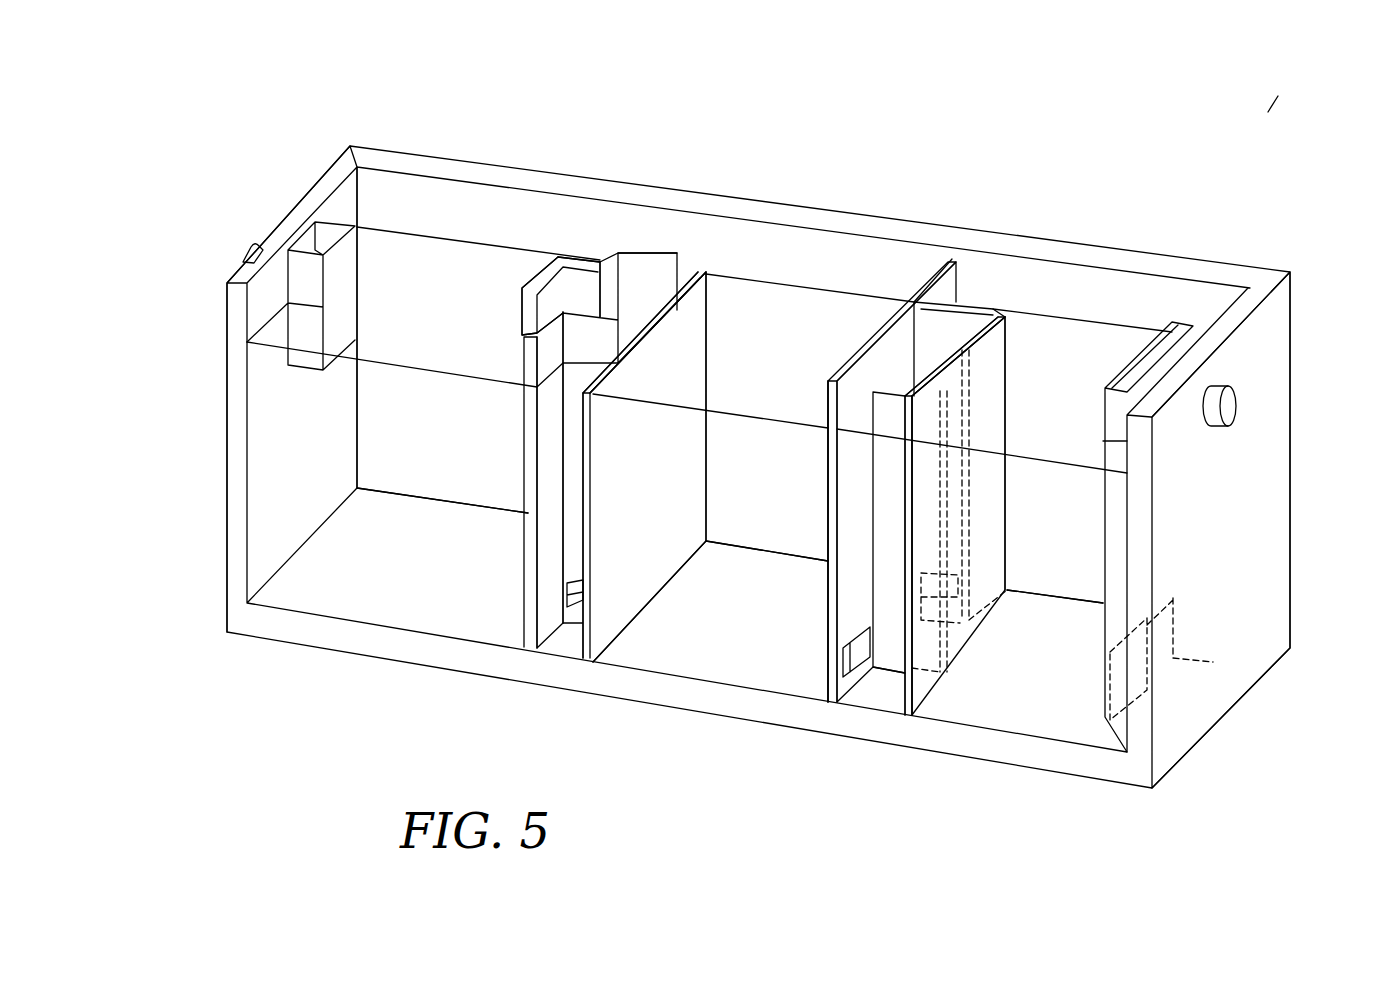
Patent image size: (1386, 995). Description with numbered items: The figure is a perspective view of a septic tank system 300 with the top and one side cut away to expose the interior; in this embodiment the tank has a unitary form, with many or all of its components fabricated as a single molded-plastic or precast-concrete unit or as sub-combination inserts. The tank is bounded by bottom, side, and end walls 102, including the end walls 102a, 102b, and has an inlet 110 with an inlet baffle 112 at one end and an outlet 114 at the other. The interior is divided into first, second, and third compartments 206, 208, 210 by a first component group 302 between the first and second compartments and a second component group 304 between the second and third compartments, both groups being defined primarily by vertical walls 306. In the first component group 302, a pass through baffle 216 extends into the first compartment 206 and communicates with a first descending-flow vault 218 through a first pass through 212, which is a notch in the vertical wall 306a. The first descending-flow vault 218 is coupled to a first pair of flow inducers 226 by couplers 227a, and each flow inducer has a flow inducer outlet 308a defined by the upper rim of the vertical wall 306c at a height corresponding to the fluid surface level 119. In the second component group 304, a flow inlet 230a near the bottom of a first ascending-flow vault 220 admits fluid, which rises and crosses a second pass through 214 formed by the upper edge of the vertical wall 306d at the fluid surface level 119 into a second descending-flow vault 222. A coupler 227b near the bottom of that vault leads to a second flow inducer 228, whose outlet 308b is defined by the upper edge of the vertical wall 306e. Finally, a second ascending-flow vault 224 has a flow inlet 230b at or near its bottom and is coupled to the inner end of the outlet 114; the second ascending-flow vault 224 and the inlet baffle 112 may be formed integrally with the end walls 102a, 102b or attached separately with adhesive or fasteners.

The septic tank system 300 is at (1280, 100).
The bottom, side, and end walls 102 is at (935, 753).
The end wall 102a is at (322, 188).
The end wall 102b is at (1238, 310).
The inlet 110 is at (243, 250).
The inlet baffle 112 is at (345, 300).
The outlet 114 is at (1228, 428).
The fluid surface level 119 is at (420, 225).
The first compartment 206 is at (465, 190).
The second compartment 208 is at (825, 240).
The third compartment 210 is at (1140, 280).
The first pass through 212 is at (575, 298).
The second pass through 214 is at (850, 375).
The pass through baffle 216 is at (560, 250).
The first descending-flow vault 218 is at (650, 240).
The first ascending-flow vault 220 is at (885, 362).
The second descending-flow vault 222 is at (935, 310).
The second ascending-flow vault 224 is at (1195, 310).
The first pair of flow inducers 226 is at (700, 240).
The couplers 227a is at (572, 580).
The coupler 227b is at (953, 573).
The second flow inducer 228 is at (1000, 265).
The flow inlet 230a is at (838, 660).
The flow inlet 230b is at (1112, 657).
The first component group 302 is at (585, 200).
The second component group 304 is at (902, 245).
The vertical walls 306 is at (528, 567).
The vertical wall 306a is at (607, 248).
The vertical wall 306c is at (672, 442).
The vertical wall 306d is at (890, 500).
The vertical wall 306e is at (1003, 380).
The flow inducer outlet 308a is at (707, 272).
The outlet 308b is at (995, 308).